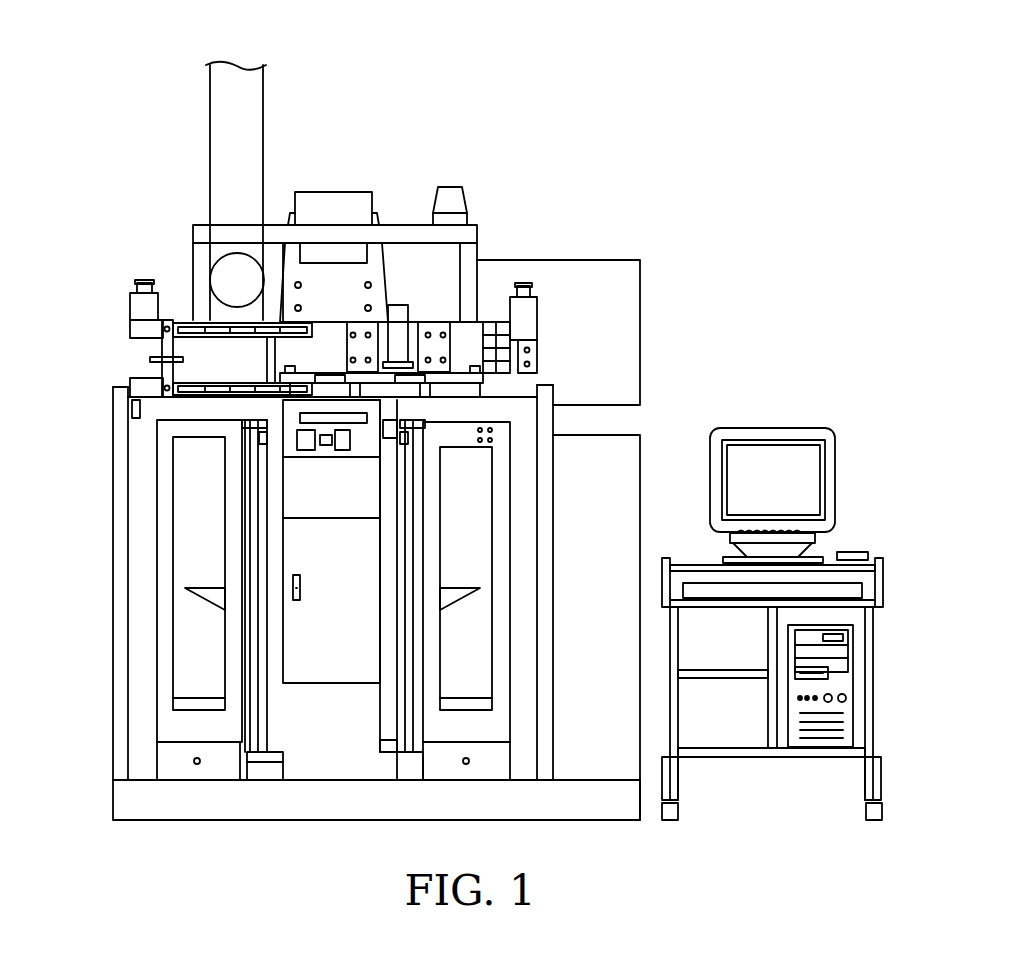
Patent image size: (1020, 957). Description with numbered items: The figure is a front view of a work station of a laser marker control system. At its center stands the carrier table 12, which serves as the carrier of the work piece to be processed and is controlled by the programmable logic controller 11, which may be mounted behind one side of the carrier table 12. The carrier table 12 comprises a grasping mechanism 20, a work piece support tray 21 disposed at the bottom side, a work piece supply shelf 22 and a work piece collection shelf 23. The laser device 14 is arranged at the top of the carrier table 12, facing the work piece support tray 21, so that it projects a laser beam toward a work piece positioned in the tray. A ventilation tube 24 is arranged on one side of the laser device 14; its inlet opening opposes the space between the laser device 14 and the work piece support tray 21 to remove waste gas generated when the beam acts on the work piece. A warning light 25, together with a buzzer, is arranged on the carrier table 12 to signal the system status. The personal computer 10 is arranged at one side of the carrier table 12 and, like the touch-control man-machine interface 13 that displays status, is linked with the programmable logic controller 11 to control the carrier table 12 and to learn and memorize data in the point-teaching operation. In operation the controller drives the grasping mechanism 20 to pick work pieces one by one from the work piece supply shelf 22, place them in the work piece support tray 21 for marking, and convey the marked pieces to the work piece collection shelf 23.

The personal computer 10 is at (813, 405).
The programmable logic controller 11 is at (657, 268).
The carrier table 12 is at (101, 382).
The industrial man-machine interface 13 is at (655, 453).
The laser device 14 is at (368, 182).
The grasping mechanism 20 is at (430, 302).
The work piece support tray 21 is at (352, 420).
The work piece supply shelf 22 is at (508, 485).
The work piece collection shelf 23 is at (162, 572).
The ventilation tube 24 is at (222, 136).
The warning light 25 is at (452, 192).